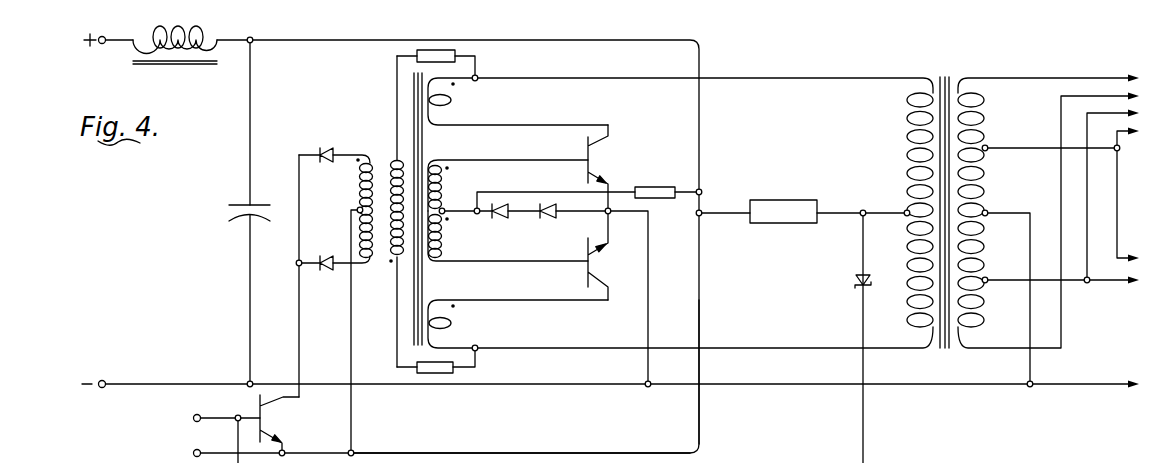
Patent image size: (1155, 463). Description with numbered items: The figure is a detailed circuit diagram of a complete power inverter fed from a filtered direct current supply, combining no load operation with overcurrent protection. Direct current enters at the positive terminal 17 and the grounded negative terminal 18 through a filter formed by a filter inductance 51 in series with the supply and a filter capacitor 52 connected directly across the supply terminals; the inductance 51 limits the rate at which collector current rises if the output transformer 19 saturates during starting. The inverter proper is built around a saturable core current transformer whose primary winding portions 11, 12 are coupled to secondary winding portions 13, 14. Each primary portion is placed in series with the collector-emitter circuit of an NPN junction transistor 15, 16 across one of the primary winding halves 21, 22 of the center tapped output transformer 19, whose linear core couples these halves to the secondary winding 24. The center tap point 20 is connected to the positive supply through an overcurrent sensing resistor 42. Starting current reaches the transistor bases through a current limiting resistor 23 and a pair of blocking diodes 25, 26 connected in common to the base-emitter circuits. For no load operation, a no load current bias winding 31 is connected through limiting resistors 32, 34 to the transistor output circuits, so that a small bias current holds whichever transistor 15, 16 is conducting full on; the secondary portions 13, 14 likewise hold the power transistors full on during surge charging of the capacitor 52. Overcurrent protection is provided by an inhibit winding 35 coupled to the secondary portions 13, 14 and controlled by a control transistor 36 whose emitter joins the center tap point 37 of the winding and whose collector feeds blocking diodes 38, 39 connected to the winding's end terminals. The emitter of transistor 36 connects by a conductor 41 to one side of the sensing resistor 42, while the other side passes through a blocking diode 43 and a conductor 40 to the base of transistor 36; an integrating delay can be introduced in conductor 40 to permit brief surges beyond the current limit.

The primary winding portion 11 is at (450, 100).
The primary winding portion 12 is at (449, 321).
The secondary winding portion 13 is at (443, 181).
The secondary winding portion 14 is at (437, 238).
The NPN junction transistor 15 is at (586, 147).
The NPN junction transistor 16 is at (586, 280).
The positive terminal 17 is at (101, 56).
The negative terminal 18 is at (108, 381).
The output transformer 19 is at (934, 82).
The center tap point 20 is at (905, 210).
The primary winding half 21 is at (907, 118).
The primary winding half 22 is at (910, 288).
The current limiting resistor 23 is at (651, 187).
The secondary winding 24 is at (984, 196).
The blocking diode 25 is at (503, 228).
The blocking diode 26 is at (548, 228).
The no load current bias winding 31 is at (396, 158).
The limiting resistor 32 is at (458, 56).
The limiting resistor 34 is at (460, 369).
The inhibit winding 35 is at (359, 178).
The control transistor 36 is at (248, 401).
The center tap point 37 is at (358, 202).
The blocking diode 38 is at (326, 147).
The blocking diode 39 is at (334, 280).
The conductor 40 is at (549, 462).
The conductor 41 is at (500, 456).
The overcurrent sensing resistor 42 is at (785, 201).
The blocking diode 43 is at (855, 278).
The filter inductance 51 is at (190, 52).
The filter capacitor 52 is at (242, 204).